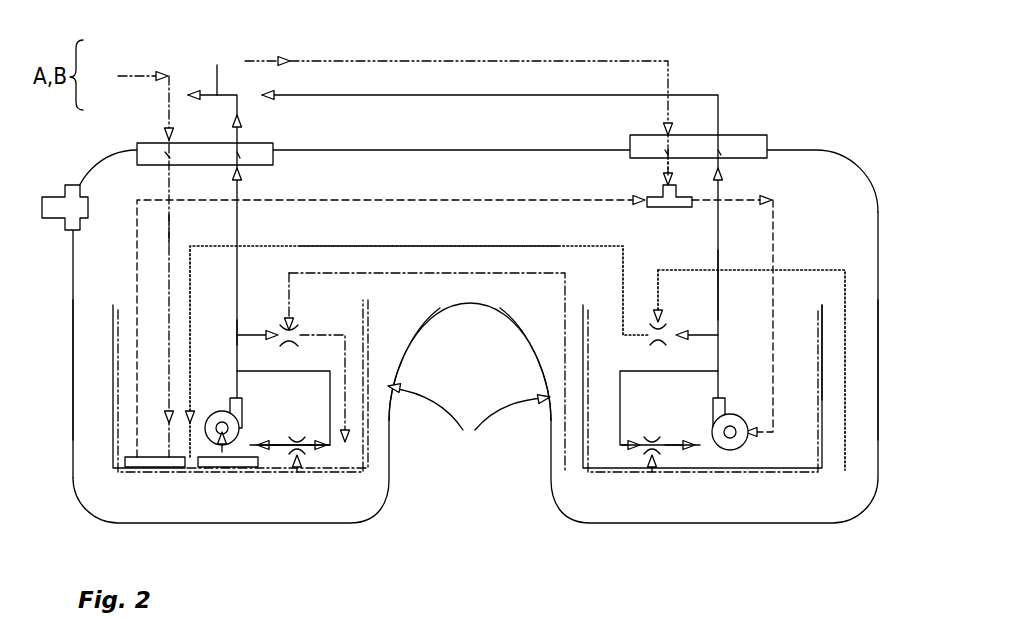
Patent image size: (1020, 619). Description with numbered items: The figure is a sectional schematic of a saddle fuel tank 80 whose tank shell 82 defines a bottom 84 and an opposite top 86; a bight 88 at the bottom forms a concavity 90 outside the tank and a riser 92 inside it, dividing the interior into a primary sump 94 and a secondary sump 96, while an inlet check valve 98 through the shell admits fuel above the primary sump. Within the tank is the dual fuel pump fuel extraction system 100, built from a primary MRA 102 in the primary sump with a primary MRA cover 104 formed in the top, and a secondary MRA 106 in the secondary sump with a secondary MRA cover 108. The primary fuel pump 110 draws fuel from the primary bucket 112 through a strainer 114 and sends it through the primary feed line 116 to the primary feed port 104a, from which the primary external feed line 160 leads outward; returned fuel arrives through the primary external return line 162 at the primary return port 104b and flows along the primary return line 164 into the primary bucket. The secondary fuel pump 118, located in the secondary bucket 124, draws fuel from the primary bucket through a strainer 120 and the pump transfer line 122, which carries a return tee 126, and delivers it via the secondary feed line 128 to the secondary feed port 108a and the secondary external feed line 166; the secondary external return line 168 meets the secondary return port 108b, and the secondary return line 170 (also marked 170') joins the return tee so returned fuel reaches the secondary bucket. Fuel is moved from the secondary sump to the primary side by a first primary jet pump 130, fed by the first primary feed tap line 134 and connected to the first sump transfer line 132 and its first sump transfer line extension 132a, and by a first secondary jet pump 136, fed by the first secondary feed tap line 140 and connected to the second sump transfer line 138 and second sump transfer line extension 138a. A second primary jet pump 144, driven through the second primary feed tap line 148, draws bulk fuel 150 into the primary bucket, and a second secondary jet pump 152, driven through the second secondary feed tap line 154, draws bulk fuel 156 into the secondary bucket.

The saddle fuel tank 80 is at (850, 146).
The tank shell 82 is at (878, 262).
The bottom 84 is at (312, 523).
The top 86 is at (487, 150).
The bight 88 is at (409, 342).
The concavity 90 is at (491, 378).
The riser 92 is at (523, 345).
The primary sump 94 is at (96, 402).
The secondary sump 96 is at (861, 420).
The inlet check valve 98 is at (56, 185).
The dual fuel pump fuel extraction system 100 is at (469, 418).
The primary MRA 102 is at (294, 204).
The primary MRA cover 104 is at (257, 143).
The primary feed port 104a is at (237, 155).
The primary return port 104b is at (170, 155).
The secondary MRA 106 is at (596, 251).
The secondary MRA cover 108 is at (752, 135).
The secondary feed port 108a is at (720, 152).
The secondary return port 108b is at (668, 152).
The primary fuel pump 110 is at (245, 414).
The primary bucket 112 is at (113, 325).
The strainer 114 is at (248, 470).
The primary feed line 116 is at (237, 328).
The secondary fuel pump 118 is at (712, 398).
The strainer 120 is at (176, 470).
The pump transfer line 122 is at (530, 200).
The secondary bucket 124 is at (823, 355).
The return tee 126 is at (678, 207).
The secondary feed line 128 is at (718, 288).
The first primary jet pump 130 is at (270, 347).
The first sump transfer line 132 is at (505, 273).
The first sump transfer line extension 132a is at (318, 330).
The first primary feed tap line 134 is at (247, 333).
The first secondary jet pump 136 is at (660, 342).
The second sump transfer line 138 is at (512, 246).
The second sump transfer line extension 138a is at (790, 270).
The first secondary feed tap line 140 is at (697, 333).
The second primary jet pump 144 is at (287, 440).
The second primary feed tap line 148 is at (290, 370).
The bulk fuel 150 is at (297, 472).
The second secondary jet pump 152 is at (655, 437).
The second secondary feed tap line 154 is at (620, 400).
The bulk fuel 156 is at (652, 472).
The primary external feed line 160 is at (217, 65).
The primary external return line 162 is at (125, 72).
The primary return line 164 is at (165, 228).
The secondary external feed line 166 is at (495, 95).
The secondary external return line 168 is at (505, 60).
The secondary return line 170 is at (697, 110).
The fluid inlet line 170' is at (743, 251).